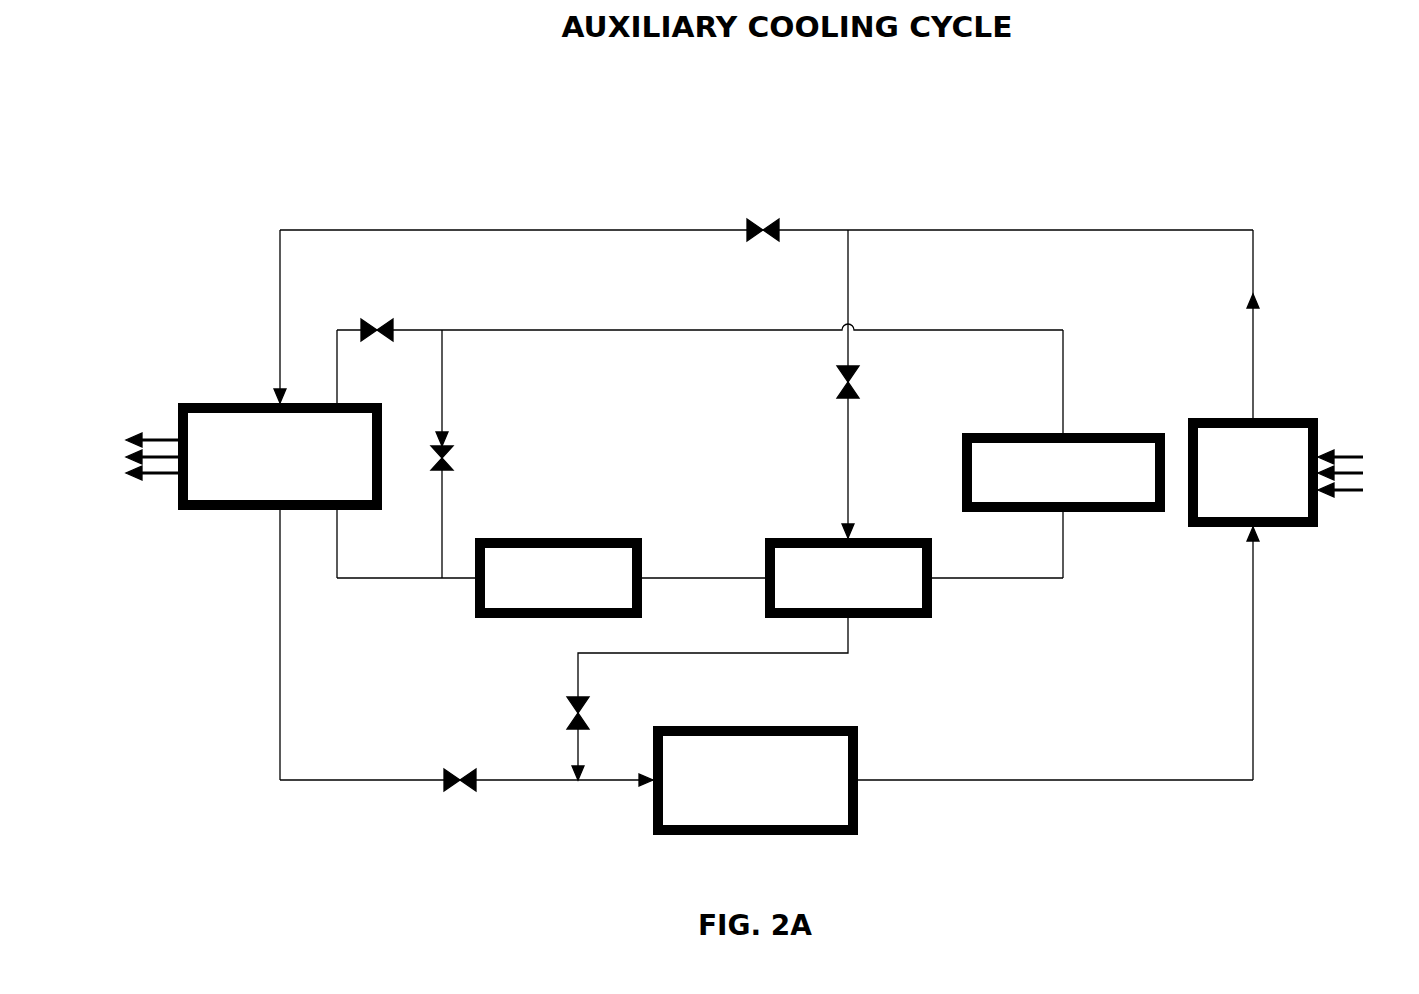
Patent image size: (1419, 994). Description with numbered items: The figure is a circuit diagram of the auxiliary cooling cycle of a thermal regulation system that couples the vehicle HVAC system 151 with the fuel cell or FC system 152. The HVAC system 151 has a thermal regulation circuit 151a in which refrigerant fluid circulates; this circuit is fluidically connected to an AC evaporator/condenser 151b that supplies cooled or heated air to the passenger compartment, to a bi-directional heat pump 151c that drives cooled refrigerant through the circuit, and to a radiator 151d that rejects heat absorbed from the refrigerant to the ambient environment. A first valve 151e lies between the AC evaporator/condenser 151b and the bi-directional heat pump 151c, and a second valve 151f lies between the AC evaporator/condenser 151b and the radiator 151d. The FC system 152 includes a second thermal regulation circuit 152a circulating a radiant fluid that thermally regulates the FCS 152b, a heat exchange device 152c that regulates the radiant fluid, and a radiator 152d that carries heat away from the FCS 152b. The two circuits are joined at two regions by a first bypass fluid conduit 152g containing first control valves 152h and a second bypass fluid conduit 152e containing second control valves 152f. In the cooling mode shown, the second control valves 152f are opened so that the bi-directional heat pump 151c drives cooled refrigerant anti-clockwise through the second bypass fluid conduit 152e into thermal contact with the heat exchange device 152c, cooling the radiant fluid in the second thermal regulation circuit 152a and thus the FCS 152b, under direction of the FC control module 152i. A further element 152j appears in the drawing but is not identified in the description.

The HVAC system 151 is at (752, 512).
The thermal regulation circuit 151a is at (522, 232).
The AC evaporator/condenser 151b is at (276, 402).
The bi-directional heat pump 151c is at (652, 784).
The radiator 151d is at (1261, 418).
The first valve 151e is at (455, 785).
The second valve 151f is at (752, 230).
The FC system 152 is at (729, 505).
The second thermal regulation circuit 152a is at (570, 330).
The FCS 152b is at (550, 538).
The heat exchange device 152c is at (932, 578).
The radiator 152d is at (1066, 432).
The second bypass fluid conduit 152e is at (852, 460).
The second control valves 152f is at (848, 392).
The first bypass fluid conduit 152g is at (768, 653).
The first control valves 152h is at (572, 700).
The FC control module 152i is at (378, 325).
The valve 152j is at (448, 452).